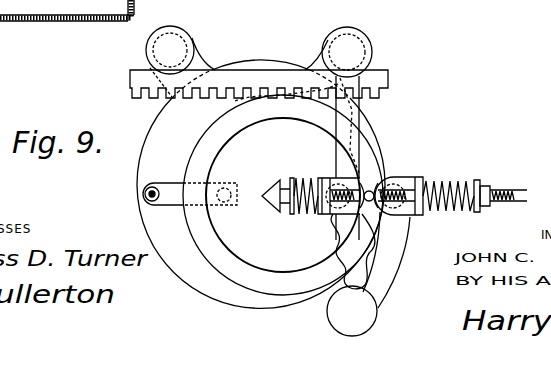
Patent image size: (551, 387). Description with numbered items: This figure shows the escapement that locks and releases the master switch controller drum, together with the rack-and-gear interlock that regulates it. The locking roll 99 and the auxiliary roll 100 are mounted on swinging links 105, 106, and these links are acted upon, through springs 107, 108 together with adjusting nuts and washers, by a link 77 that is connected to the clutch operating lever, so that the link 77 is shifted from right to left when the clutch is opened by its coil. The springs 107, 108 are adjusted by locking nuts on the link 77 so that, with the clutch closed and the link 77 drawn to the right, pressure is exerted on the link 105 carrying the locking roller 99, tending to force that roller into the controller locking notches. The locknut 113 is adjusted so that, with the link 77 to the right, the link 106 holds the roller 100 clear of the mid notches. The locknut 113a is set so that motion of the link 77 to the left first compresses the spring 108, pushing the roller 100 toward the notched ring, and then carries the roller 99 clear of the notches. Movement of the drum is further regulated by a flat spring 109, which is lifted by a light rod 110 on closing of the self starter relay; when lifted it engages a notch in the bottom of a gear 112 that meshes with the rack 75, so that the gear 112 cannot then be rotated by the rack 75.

The rack 75 is at (132, 86).
The link 77 is at (517, 192).
The locking roll 99 is at (333, 178).
The auxiliary roll 100 is at (397, 208).
The swinging link 105 is at (359, 108).
The swinging link 106 is at (398, 259).
The spring 107 is at (302, 179).
The spring 108 is at (448, 185).
The flat spring 109 is at (175, 206).
The light rod 110 is at (154, 188).
The gear 112 is at (237, 102).
The locknut 113 is at (410, 178).
The locknut 113a is at (358, 210).